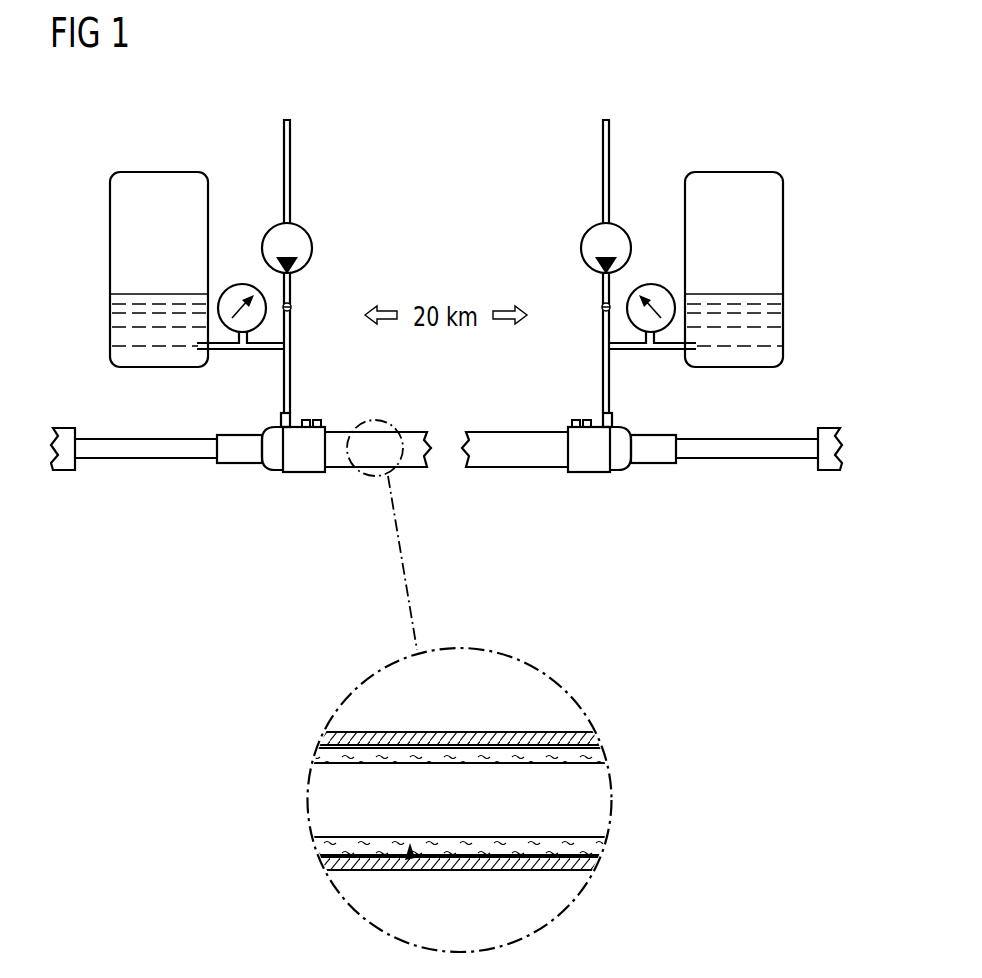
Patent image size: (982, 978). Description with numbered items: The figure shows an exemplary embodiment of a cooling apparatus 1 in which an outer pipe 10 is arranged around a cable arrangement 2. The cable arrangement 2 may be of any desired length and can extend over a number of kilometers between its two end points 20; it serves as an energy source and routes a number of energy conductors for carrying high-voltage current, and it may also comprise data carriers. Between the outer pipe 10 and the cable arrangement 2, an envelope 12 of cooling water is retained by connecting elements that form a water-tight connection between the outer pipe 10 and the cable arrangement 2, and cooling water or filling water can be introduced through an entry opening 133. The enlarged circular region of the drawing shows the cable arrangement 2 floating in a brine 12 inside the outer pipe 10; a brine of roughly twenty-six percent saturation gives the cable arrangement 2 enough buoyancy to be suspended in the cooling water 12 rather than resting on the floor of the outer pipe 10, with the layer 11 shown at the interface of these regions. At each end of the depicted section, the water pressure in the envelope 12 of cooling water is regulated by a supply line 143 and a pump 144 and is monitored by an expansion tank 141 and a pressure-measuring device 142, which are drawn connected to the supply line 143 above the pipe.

The cooling apparatus 1 is at (667, 92).
The cable arrangement 2 is at (194, 450).
The outer pipe 10 is at (506, 455).
The cable sheath 11 is at (410, 856).
The envelope of cooling water 12 is at (450, 847).
The end points 20 is at (64, 428).
The entry opening 133 is at (291, 420).
The expansion tank 141 is at (160, 171).
The pressure-measuring device 142 is at (232, 283).
The supply line 143 is at (291, 185).
The pump 144 is at (313, 250).